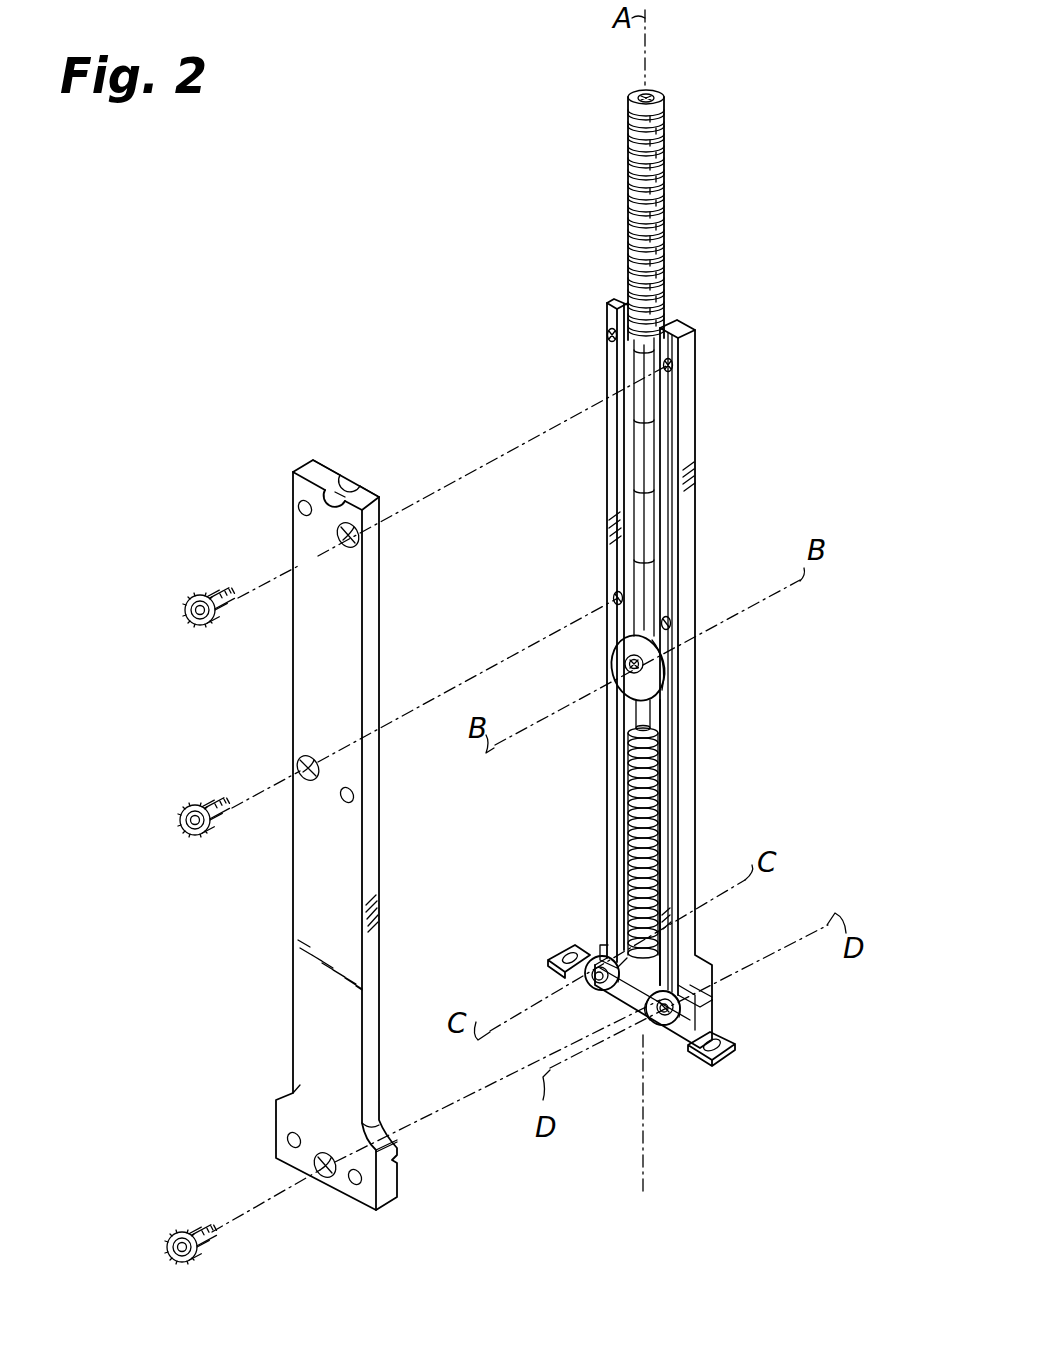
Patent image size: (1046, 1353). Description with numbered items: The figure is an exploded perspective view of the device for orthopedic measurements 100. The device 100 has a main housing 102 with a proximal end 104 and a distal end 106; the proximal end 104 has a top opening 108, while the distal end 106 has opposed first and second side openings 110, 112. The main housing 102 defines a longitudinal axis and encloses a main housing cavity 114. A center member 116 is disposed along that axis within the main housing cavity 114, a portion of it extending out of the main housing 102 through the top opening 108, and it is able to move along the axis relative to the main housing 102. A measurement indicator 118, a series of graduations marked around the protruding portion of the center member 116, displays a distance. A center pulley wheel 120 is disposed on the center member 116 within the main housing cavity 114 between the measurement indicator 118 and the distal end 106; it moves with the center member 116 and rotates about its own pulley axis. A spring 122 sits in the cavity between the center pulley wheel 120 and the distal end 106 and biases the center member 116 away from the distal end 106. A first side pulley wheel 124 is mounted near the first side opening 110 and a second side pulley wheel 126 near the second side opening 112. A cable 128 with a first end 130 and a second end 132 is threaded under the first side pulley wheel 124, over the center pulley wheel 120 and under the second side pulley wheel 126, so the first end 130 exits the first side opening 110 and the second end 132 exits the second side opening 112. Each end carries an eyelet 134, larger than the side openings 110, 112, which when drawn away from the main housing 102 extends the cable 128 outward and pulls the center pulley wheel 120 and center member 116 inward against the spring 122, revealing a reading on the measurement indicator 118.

The device for orthopedic measurements 100 is at (328, 292).
The main housing 102 is at (296, 925).
The proximal end 104 is at (293, 475).
The distal end 106 is at (628, 1006).
The top opening 108 is at (343, 489).
The first side opening 110 is at (600, 957).
The second side opening 112 is at (693, 1020).
The main housing cavity 114 is at (633, 722).
The center member 116 is at (628, 160).
The measurement indicator 118 is at (628, 247).
The center pulley wheel 120 is at (628, 675).
The spring 122 is at (660, 800).
The first side pulley wheel 124 is at (596, 960).
The second side pulley wheel 126 is at (660, 1026).
The cable 128 is at (660, 828).
The first end 130 is at (583, 977).
The second end 132 is at (682, 1036).
The eyelet 134 is at (736, 1050).